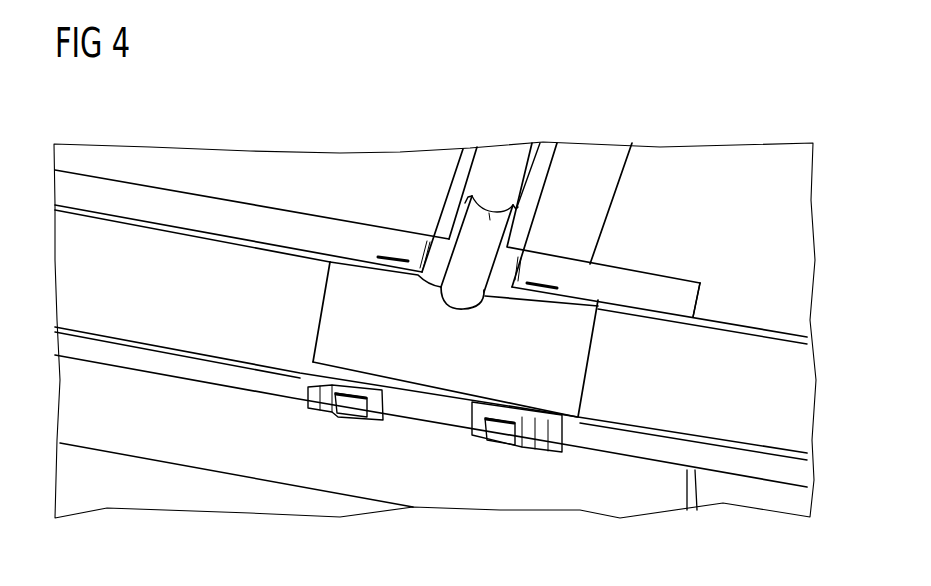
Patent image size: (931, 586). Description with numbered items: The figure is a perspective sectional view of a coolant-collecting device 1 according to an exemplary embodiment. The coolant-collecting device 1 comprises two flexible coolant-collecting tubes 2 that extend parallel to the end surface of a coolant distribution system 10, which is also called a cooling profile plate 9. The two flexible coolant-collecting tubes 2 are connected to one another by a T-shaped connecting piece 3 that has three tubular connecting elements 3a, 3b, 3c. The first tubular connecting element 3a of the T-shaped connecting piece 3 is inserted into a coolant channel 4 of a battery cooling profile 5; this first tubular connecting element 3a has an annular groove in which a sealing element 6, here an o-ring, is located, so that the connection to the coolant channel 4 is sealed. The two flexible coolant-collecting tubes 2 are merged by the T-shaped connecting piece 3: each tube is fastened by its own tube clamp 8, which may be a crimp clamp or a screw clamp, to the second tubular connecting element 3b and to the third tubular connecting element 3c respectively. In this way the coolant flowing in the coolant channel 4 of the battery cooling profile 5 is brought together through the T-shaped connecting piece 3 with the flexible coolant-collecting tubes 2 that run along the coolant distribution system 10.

The coolant-collecting device 1 is at (707, 280).
The flexible coolant-collecting tube 2 is at (108, 221).
The T-shaped connecting piece 3 is at (530, 322).
The first tubular connecting element 3a is at (490, 212).
The second tubular connecting element 3b is at (340, 332).
The third tubular connecting element 3c is at (550, 355).
The coolant channel 4 is at (527, 157).
The battery cooling profile 5 is at (603, 182).
The sealing element 6 is at (465, 203).
The tube clamp 8 is at (343, 404).
The cooling profile plate 9 is at (613, 495).
The coolant distribution system 10 is at (738, 126).